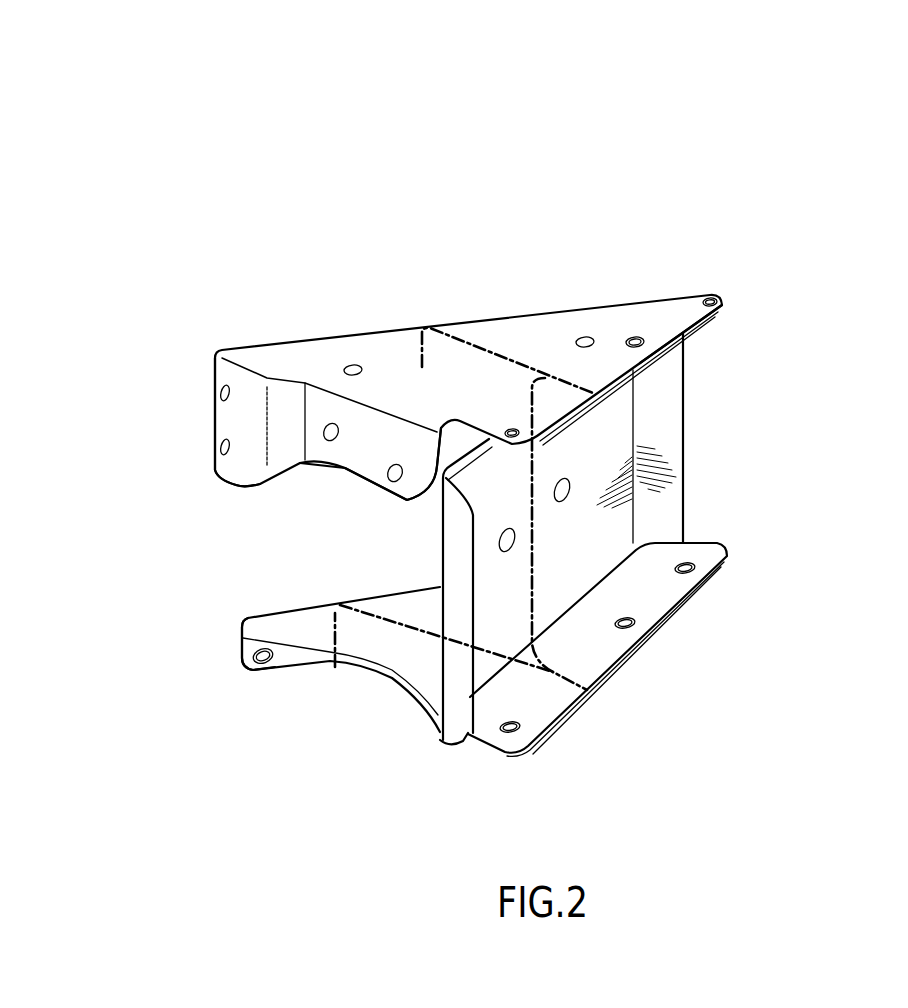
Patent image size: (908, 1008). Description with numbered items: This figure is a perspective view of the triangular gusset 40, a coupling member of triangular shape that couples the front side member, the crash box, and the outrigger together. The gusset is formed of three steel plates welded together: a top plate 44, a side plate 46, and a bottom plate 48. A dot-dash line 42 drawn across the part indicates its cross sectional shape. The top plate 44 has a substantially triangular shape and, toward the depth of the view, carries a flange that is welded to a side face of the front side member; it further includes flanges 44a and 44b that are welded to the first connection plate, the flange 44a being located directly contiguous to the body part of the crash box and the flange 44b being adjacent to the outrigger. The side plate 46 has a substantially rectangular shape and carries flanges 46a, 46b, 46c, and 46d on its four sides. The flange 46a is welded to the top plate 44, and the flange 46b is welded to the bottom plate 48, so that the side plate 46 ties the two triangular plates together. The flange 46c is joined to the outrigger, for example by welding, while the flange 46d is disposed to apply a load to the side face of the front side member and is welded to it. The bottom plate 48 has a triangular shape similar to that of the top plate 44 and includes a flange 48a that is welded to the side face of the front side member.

The triangular gusset 40 is at (557, 128).
The dot-dash line 42 is at (497, 350).
The top plate 44 is at (543, 327).
The flange 44a is at (220, 415).
The flange 44b is at (360, 465).
The side plate 46 is at (683, 415).
The flange 46a is at (660, 358).
The flange 46b is at (657, 605).
The flange 46c is at (457, 580).
The flange 46d is at (660, 493).
The bottom plate 48 is at (387, 672).
The flange 48a is at (242, 665).